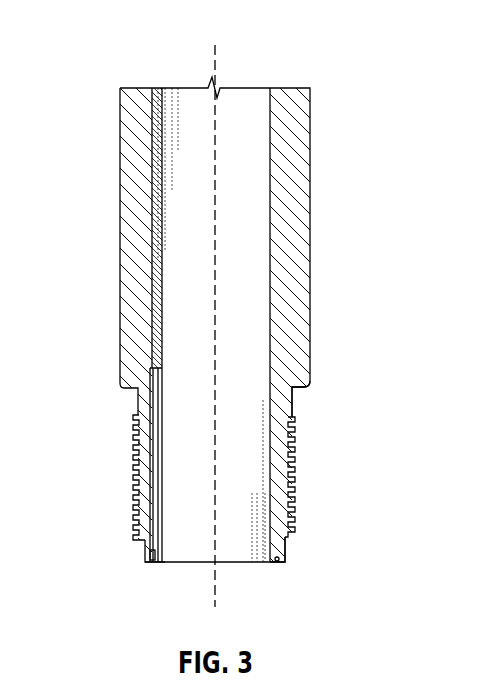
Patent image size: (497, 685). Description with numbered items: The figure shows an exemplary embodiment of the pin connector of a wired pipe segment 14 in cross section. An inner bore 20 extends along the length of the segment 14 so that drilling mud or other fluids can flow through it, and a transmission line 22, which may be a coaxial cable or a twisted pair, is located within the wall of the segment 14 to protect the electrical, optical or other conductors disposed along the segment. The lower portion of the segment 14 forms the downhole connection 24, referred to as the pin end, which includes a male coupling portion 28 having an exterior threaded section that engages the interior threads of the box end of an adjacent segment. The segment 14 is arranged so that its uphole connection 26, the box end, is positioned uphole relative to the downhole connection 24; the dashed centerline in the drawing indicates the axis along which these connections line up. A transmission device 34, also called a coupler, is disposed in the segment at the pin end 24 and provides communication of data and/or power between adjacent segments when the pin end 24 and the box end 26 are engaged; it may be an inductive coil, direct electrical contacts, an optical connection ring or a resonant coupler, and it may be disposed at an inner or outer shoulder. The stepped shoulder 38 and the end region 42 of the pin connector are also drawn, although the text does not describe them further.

The wired pipe segment 14 is at (307, 147).
The inner bore 20 is at (182, 218).
The transmission line 22 is at (152, 300).
The downhole connection 24 is at (140, 405).
The uphole connection 26 is at (215, 46).
The male coupling portion 28 is at (293, 482).
The transmission device 34 is at (148, 565).
The shoulder 38 is at (295, 398).
The distal end of body 42 is at (285, 548).